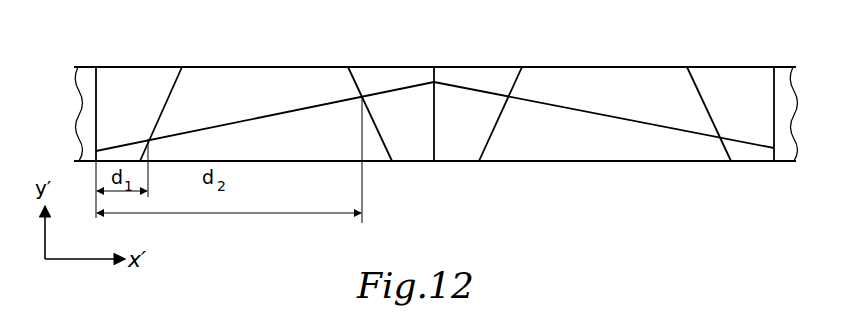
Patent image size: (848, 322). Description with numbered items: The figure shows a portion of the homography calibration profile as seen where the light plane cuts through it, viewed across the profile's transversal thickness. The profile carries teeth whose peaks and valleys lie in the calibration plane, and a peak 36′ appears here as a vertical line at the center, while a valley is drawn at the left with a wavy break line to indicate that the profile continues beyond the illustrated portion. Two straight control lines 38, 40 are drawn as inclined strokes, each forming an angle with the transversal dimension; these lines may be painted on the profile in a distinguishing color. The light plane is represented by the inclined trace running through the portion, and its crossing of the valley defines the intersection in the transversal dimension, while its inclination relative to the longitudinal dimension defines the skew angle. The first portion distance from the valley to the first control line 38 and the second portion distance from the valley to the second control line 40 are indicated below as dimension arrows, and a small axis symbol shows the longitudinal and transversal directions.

The peak portion 36′ is at (434, 67).
The first control line 38 is at (170, 88).
The second control line 40 is at (358, 88).